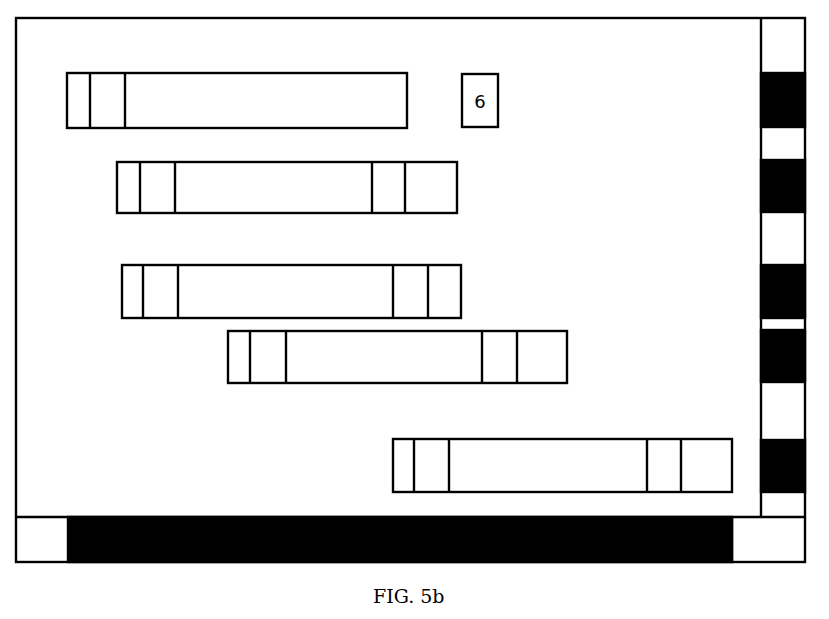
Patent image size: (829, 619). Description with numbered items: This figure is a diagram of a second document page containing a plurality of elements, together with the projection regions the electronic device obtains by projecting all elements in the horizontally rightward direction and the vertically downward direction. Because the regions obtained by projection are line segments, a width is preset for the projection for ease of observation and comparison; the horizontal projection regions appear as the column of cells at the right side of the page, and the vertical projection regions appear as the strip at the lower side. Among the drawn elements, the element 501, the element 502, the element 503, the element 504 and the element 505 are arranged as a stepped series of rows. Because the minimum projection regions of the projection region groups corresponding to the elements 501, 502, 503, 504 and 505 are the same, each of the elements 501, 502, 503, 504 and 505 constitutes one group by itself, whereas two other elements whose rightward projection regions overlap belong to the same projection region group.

The element 501 is at (90, 73).
The element 502 is at (140, 162).
The element 503 is at (143, 265).
The element 504 is at (228, 357).
The element 505 is at (398, 439).